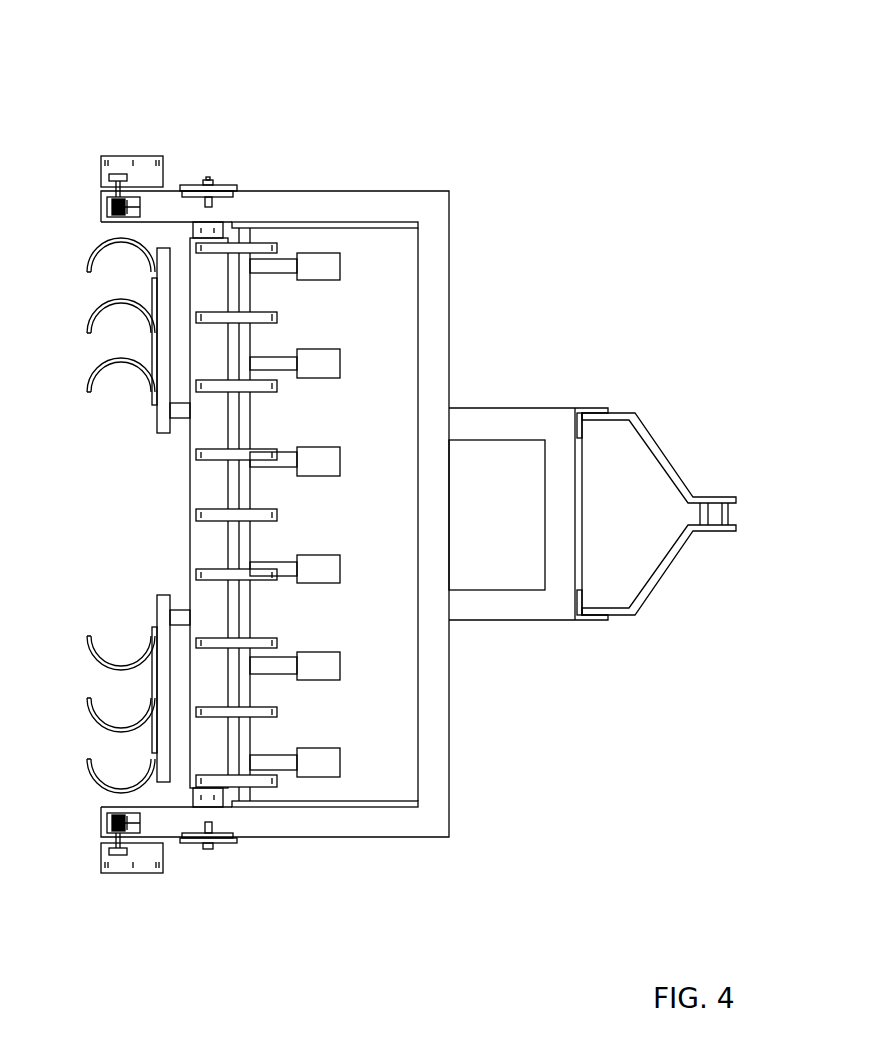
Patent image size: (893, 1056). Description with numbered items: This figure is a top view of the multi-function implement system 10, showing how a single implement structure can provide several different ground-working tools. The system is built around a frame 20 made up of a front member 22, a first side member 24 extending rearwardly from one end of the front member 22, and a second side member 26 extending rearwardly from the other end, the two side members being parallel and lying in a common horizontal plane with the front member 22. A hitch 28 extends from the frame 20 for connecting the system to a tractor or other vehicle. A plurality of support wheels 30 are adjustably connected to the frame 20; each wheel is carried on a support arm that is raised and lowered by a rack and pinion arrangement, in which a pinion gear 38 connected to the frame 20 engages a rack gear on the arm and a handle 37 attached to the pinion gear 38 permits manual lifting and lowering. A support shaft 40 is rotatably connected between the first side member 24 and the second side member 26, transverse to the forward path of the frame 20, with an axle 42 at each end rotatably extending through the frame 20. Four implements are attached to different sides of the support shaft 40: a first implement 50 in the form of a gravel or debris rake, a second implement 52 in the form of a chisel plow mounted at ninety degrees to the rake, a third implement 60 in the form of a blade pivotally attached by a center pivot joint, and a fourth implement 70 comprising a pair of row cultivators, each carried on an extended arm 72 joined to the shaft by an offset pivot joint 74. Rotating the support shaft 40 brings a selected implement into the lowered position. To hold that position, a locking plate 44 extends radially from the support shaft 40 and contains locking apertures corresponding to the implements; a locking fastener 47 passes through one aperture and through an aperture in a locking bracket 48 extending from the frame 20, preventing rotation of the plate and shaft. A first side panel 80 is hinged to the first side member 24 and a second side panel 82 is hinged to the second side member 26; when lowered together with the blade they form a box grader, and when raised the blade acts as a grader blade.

The multi-function implement system 10 is at (633, 112).
The frame 20 is at (354, 504).
The front member 22 is at (433, 333).
The first side member 24 is at (362, 191).
The second side member 26 is at (390, 837).
The hitch 28 is at (668, 436).
The support wheels 30 is at (132, 157).
The handle 37 is at (118, 174).
The pinion gear 38 is at (107, 207).
The support shaft 40 is at (197, 297).
The axle 42 is at (203, 232).
The locking plate 44 is at (232, 185).
The locking fastener 47 is at (209, 178).
The locking bracket 48 is at (238, 202).
The first implement 50 is at (283, 639).
The second implement 52 is at (319, 786).
The third implement 60 is at (258, 425).
The fourth implement 70 is at (125, 367).
The extended arm 72 is at (162, 428).
The offset pivot joint 74 is at (180, 420).
The first side panel 80 is at (385, 228).
The second side panel 82 is at (373, 801).